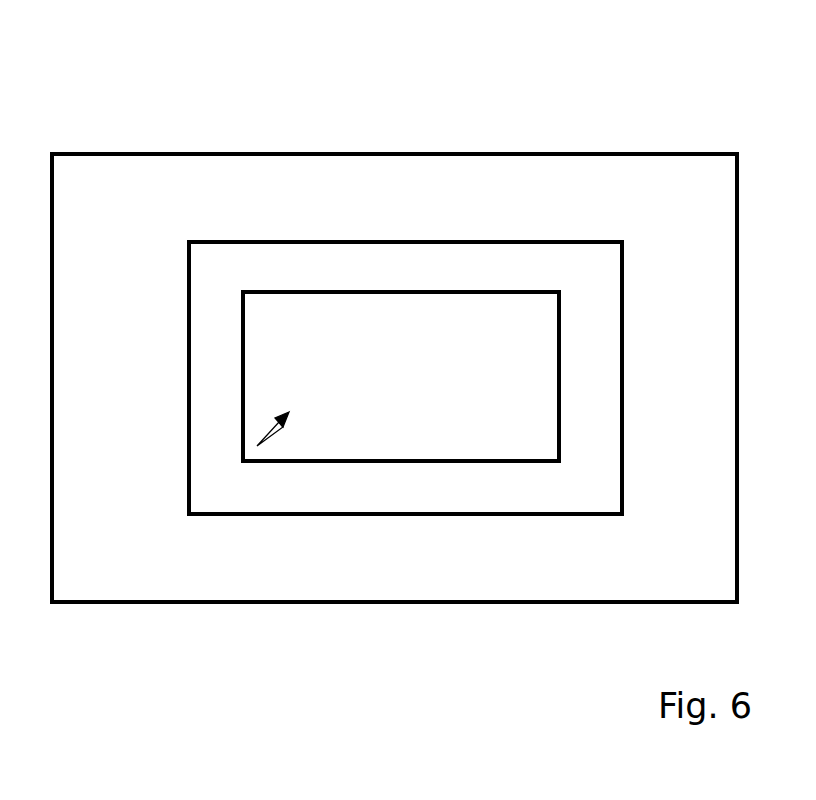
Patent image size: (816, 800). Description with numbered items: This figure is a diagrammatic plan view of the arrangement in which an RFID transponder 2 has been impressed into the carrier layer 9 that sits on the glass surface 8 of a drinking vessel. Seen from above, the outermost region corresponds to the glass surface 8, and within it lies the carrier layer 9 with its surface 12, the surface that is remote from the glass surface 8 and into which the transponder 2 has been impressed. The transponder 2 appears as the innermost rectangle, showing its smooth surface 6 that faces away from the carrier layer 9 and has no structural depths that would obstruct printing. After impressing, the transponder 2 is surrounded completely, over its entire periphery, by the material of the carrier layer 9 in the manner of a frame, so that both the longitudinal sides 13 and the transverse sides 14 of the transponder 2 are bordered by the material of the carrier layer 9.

The glass surface 8 is at (678, 255).
The surface of the carrier layer 12 is at (501, 250).
The surface of the transponder 6 is at (295, 325).
The transverse sides 14 is at (244, 396).
The longitudinal sides 13 is at (302, 464).
The carrier layer 9 is at (560, 505).
The transponder 2 is at (288, 428).